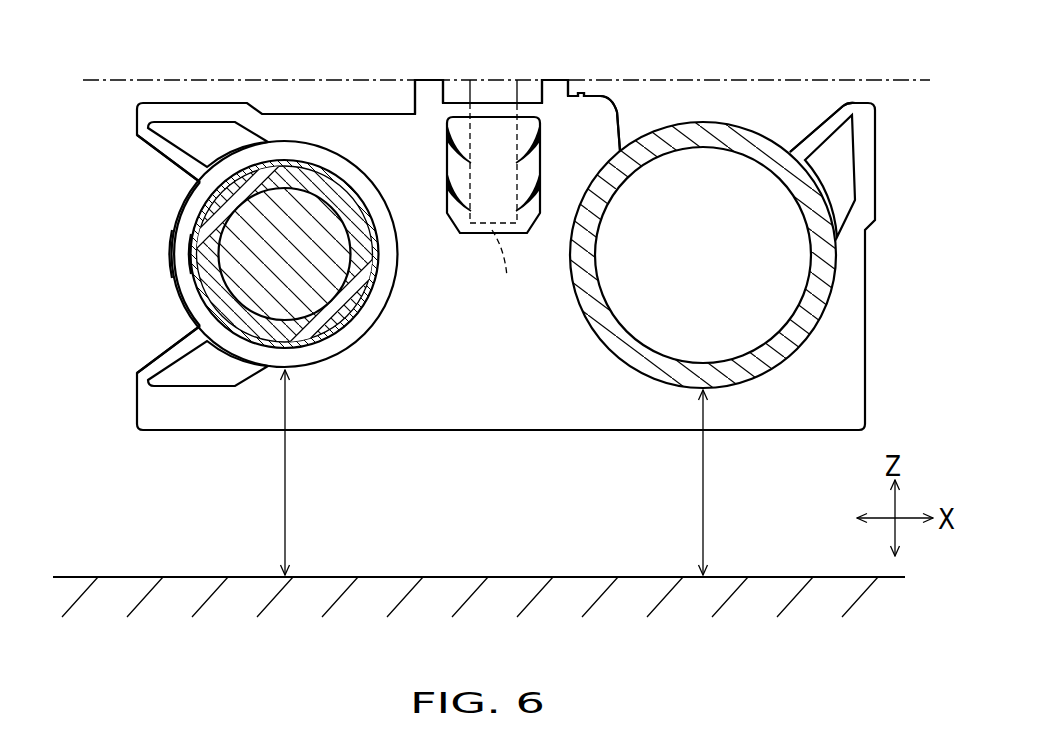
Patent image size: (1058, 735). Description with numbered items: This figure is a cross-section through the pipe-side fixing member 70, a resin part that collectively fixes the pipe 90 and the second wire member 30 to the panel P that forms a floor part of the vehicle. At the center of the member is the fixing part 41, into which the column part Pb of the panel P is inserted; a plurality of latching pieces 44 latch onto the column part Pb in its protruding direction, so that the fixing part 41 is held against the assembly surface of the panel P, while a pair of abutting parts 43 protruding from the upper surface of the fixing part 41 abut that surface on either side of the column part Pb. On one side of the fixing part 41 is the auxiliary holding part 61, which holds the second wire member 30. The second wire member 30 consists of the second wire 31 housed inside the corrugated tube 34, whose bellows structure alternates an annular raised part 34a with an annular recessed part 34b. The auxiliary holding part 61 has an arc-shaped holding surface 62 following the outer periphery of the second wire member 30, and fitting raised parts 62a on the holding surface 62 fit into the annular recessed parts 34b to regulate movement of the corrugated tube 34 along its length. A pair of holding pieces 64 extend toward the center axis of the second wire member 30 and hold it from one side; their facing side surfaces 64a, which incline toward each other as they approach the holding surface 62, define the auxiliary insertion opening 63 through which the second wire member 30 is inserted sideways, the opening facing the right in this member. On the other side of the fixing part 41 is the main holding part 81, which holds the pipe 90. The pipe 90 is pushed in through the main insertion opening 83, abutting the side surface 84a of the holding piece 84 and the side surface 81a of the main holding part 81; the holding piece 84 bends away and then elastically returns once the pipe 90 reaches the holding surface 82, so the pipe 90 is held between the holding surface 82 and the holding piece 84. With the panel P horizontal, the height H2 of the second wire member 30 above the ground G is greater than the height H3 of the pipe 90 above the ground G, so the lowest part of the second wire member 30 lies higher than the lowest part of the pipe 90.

The second wire member 30 is at (244, 223).
The second wire 31 is at (328, 337).
The corrugated tube 34 is at (230, 162).
The annular raised part 34a is at (178, 215).
The annular recessed part 34b is at (190, 243).
The fixing part 41 is at (457, 110).
The abutting part 43 is at (432, 86).
The latching piece 44 is at (455, 156).
The auxiliary holding part 61 is at (367, 249).
The holding surface 62 is at (350, 323).
The fitting raised part 62a is at (350, 185).
The auxiliary insertion opening 63 is at (195, 332).
The holding piece 64 is at (168, 150).
The side surface 64a is at (192, 175).
The pipe-side fixing member 70 is at (582, 90).
The main holding part 81 is at (687, 264).
The side surface 81a is at (614, 112).
The holding surface 82 is at (606, 338).
The main insertion opening 83 is at (820, 127).
The holding piece 84 is at (826, 136).
The side surface 84a is at (836, 106).
The pipe 90 is at (694, 237).
The panel P is at (925, 82).
The column part Pb is at (507, 272).
The ground G is at (76, 577).
The height of the second wire member H2 is at (305, 472).
The height of the pipe H3 is at (723, 482).